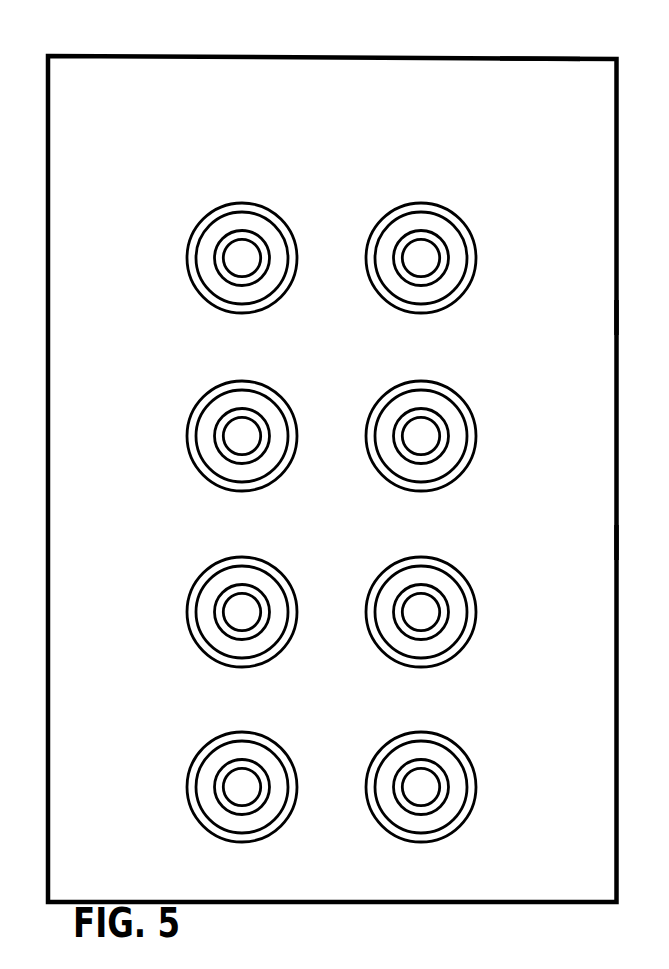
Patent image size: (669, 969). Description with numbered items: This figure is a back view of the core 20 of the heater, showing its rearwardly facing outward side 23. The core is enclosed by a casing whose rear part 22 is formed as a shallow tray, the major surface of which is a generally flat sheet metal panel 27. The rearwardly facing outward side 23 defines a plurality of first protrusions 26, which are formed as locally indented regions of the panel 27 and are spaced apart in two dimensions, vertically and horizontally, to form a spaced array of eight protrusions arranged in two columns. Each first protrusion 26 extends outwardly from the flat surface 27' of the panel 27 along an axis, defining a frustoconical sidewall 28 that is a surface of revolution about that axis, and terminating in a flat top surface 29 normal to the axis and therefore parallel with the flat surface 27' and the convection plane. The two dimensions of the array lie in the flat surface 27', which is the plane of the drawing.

The core 20 is at (608, 170).
The rear part 22 is at (602, 318).
The rearwardly facing outward side 23 is at (525, 92).
The first protrusions 26 is at (281, 212).
The flat sheet metal panel 27 is at (631, 542).
The flat surface 27' is at (332, 509).
The frustoconical sidewall 28 is at (452, 455).
The flat top surface 29 is at (422, 617).